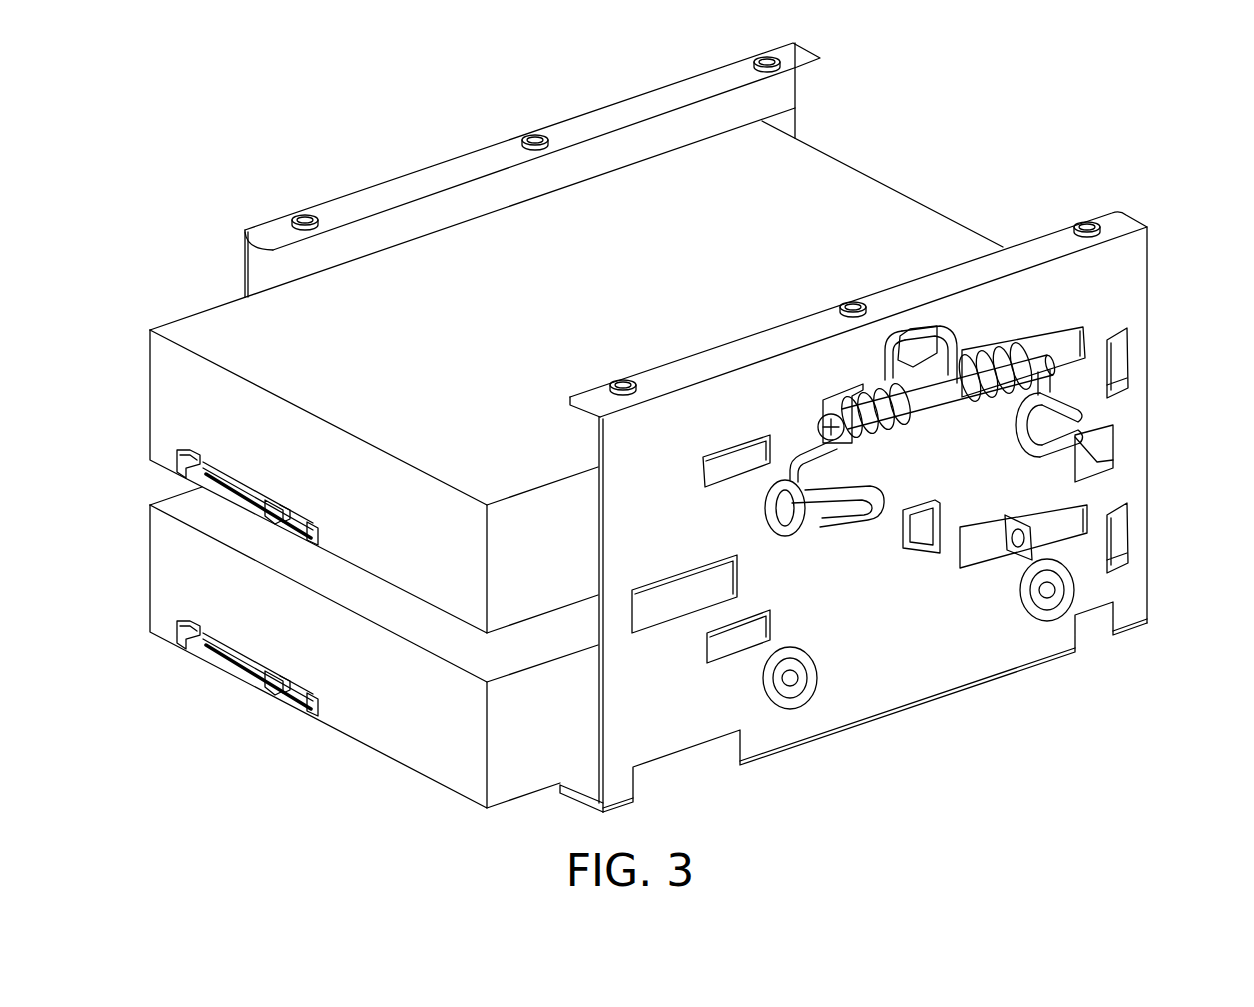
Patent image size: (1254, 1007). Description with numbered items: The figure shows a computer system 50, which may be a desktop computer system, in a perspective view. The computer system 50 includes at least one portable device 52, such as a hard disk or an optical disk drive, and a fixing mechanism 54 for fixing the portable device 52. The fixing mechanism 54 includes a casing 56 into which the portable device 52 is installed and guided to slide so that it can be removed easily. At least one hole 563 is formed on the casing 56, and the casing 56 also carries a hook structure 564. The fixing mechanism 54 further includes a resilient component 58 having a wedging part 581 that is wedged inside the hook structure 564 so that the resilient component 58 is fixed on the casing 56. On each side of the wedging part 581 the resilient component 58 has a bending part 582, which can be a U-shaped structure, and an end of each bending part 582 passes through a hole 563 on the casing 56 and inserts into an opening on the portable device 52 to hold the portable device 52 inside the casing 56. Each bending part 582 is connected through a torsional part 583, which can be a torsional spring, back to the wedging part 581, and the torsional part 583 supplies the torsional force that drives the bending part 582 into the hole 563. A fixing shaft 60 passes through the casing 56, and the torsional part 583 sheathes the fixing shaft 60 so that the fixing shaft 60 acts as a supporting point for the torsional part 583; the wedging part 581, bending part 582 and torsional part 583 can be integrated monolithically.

The computer system 50 is at (1123, 113).
The portable device 52 is at (170, 395).
The fixing mechanism 54 is at (973, 333).
The casing 56 is at (1137, 278).
The resilient component 58 is at (823, 817).
The fixing shaft 60 is at (880, 378).
The hole 563 is at (792, 515).
The hook structure 564 is at (922, 340).
The wedging part 581 is at (932, 397).
The bending part 582 is at (860, 518).
The torsional part 583 is at (882, 400).